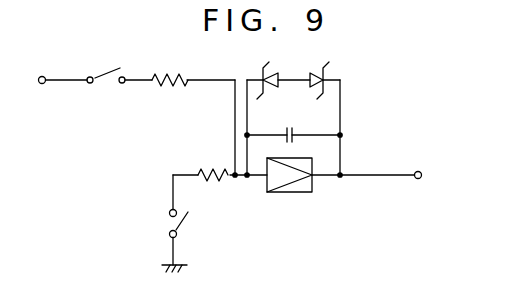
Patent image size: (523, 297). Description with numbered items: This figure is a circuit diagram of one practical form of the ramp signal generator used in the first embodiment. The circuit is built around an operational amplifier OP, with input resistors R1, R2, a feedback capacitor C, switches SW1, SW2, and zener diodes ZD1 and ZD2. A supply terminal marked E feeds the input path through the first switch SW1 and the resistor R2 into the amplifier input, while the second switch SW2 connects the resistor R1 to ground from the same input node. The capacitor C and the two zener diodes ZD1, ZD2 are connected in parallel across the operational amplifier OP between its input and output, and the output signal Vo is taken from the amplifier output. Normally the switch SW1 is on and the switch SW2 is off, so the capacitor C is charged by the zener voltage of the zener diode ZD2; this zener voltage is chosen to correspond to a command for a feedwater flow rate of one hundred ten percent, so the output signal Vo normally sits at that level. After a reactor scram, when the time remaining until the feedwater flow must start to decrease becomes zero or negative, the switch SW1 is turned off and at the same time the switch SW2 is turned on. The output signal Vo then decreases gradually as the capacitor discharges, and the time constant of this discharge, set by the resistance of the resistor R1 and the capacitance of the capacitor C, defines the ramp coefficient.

The negative supply voltage terminal E is at (38, 76).
The switch SW1 is at (106, 84).
The switch SW2 is at (184, 228).
The input resistor R1 is at (200, 180).
The input resistor R2 is at (165, 84).
The zener diode ZD1 is at (263, 68).
The zener diode ZD2 is at (323, 68).
The feedback capacitor C is at (288, 128).
The operational amplifier OP is at (298, 193).
The output signal Vo is at (425, 144).